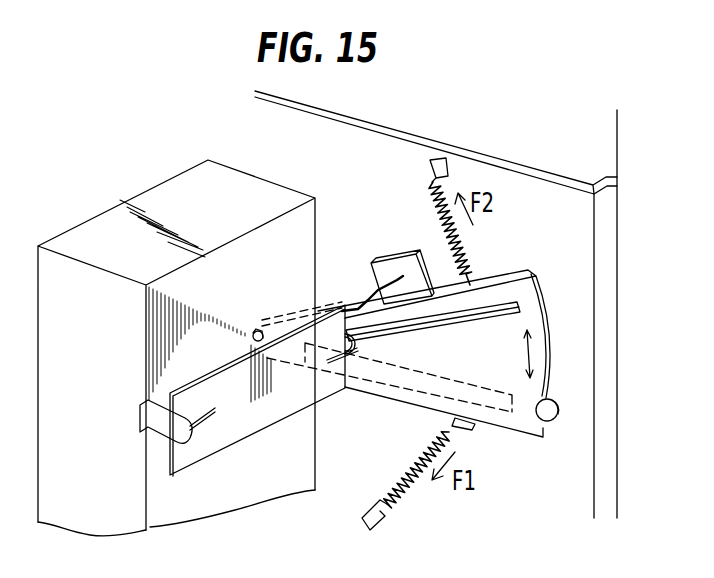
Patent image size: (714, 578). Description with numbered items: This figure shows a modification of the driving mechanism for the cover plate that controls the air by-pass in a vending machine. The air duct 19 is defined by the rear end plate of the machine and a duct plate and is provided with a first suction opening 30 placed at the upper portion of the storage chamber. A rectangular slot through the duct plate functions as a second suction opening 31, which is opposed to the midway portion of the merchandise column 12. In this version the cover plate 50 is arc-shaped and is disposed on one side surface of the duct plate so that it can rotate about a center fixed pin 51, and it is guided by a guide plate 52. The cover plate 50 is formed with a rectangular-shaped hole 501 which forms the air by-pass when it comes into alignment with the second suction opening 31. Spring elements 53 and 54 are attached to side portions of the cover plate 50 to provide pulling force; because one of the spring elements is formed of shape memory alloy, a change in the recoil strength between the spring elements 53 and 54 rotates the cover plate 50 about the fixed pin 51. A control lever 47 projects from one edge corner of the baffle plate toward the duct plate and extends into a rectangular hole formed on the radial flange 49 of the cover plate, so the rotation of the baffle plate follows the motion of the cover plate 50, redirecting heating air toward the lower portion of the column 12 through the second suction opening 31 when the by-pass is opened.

The column 12 is at (106, 226).
The air duct 19 is at (585, 242).
The first suction opening 30 is at (575, 178).
The second suction opening 31 is at (400, 385).
The control lever 47 is at (372, 288).
The radial flange 49 is at (380, 262).
The cover plate 50 is at (510, 283).
The rectangular-shaped hole 501 is at (466, 318).
The center fixed pin 51 is at (252, 328).
The guide plate 52 is at (549, 420).
The spring element 53 is at (413, 483).
The spring element 54 is at (462, 227).